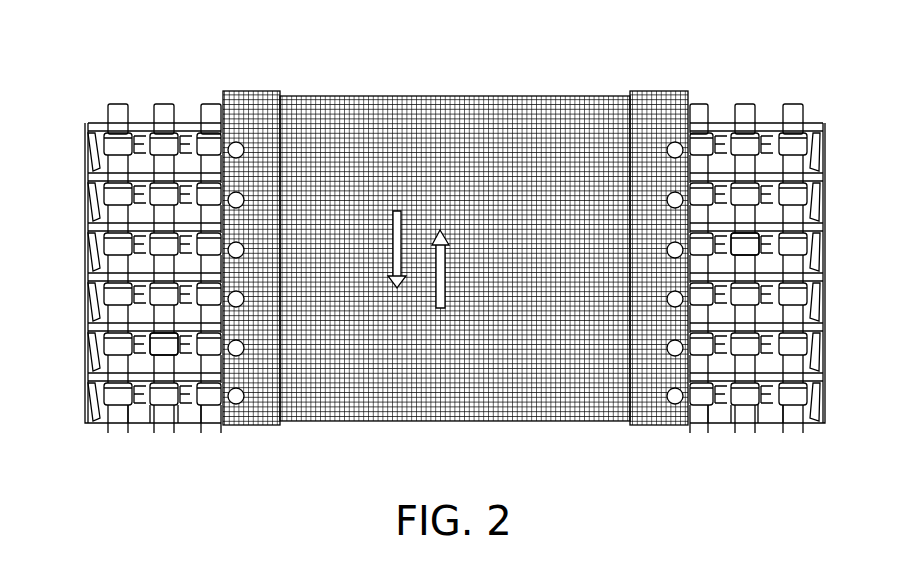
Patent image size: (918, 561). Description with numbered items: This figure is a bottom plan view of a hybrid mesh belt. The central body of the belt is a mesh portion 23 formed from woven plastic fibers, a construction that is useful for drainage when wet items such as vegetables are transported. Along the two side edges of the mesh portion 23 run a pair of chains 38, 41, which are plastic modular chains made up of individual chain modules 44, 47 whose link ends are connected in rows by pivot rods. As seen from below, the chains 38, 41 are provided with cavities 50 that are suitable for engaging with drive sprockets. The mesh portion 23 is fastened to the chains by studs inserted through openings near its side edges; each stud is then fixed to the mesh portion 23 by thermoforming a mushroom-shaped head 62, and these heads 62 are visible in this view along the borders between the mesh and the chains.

The mesh portion 23 is at (480, 122).
The chain 41 is at (90, 188).
The chain module 47 is at (85, 302).
The chain 38 is at (817, 183).
The chain module 44 is at (805, 333).
The cavity 50 is at (160, 333).
The mushroom-shaped head 62 is at (233, 343).